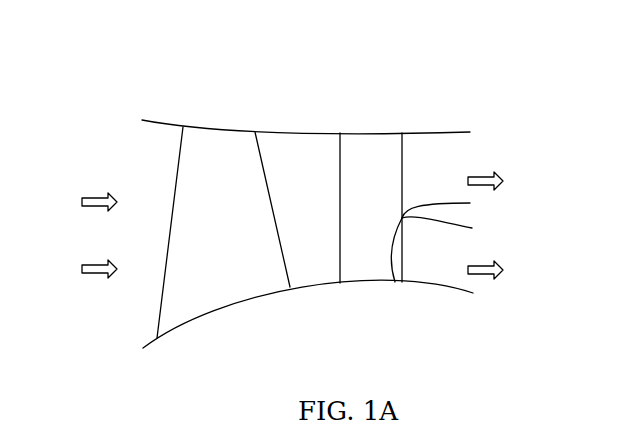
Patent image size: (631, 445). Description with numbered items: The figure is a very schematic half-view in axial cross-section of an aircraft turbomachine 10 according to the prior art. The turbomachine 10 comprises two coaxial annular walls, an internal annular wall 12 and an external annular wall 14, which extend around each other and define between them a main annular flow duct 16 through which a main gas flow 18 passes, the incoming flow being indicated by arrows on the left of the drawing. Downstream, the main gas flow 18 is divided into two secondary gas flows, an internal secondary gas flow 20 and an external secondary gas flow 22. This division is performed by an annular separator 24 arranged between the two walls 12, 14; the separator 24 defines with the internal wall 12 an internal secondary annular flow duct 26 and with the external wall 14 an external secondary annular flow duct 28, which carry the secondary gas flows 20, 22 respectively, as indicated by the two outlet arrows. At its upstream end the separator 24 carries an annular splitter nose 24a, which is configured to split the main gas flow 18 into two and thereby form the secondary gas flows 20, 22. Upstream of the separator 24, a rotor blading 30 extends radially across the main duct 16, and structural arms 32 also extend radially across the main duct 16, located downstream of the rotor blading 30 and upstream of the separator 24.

The turbomachine 10 is at (444, 80).
The internal annular wall 12 is at (326, 284).
The external annular wall 14 is at (300, 133).
The main annular flow duct 16 is at (288, 181).
The main gas flow 18 is at (97, 211).
The internal secondary gas flow 20 is at (480, 279).
The external secondary gas flow 22 is at (488, 189).
The annular separator 24 is at (470, 213).
The annular splitter nose 24a is at (395, 282).
The internal secondary annular flow duct 26 is at (523, 251).
The external secondary annular flow duct 28 is at (474, 149).
The rotor blading 30 is at (206, 297).
The structural arms 32 is at (396, 150).